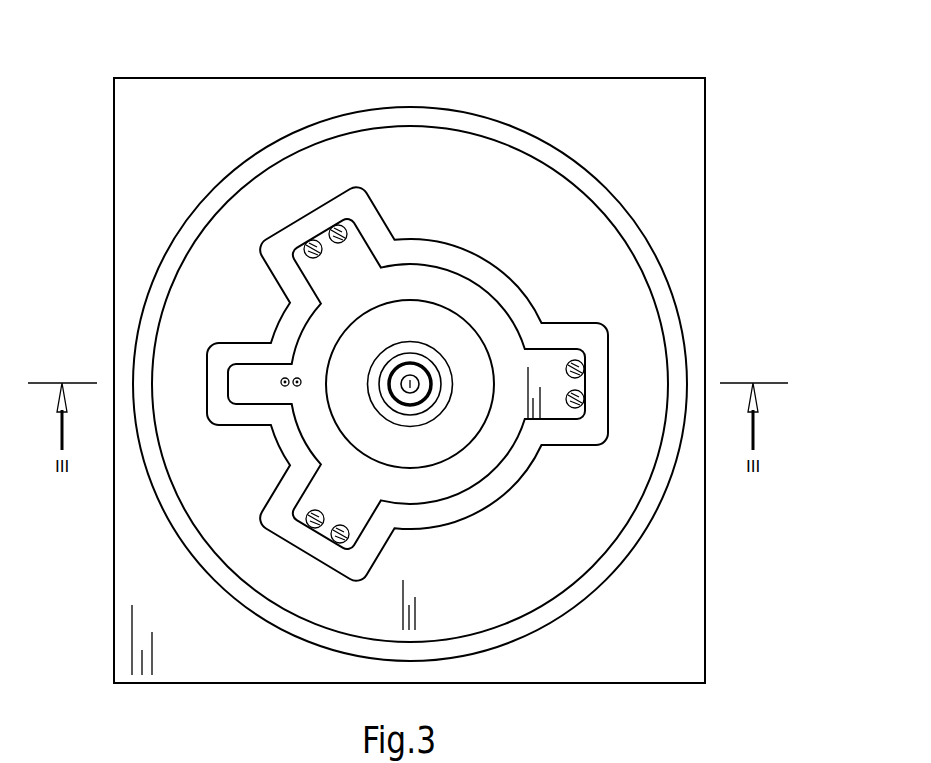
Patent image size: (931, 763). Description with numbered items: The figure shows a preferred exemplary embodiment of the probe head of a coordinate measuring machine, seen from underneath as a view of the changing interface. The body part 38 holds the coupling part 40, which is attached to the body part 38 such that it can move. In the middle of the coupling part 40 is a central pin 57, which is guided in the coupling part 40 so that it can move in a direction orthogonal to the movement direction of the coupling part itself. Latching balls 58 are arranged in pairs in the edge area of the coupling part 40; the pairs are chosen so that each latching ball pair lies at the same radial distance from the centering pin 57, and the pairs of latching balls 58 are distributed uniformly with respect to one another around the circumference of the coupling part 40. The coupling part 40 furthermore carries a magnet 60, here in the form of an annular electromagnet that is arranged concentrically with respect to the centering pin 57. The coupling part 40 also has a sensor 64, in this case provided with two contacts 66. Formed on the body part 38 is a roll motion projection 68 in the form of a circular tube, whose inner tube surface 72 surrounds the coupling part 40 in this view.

The body part 38 is at (577, 95).
The coupling part 40 is at (498, 338).
The central pin 57 is at (425, 392).
The latching balls 58 is at (312, 240).
The magnet 60 is at (450, 332).
The sensor 64 is at (289, 375).
The contacts 66 is at (296, 386).
The roll motion projection 68 is at (595, 195).
The inner tube surface 72 is at (463, 134).